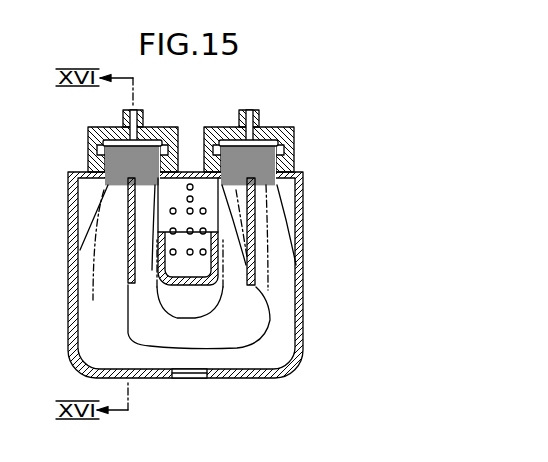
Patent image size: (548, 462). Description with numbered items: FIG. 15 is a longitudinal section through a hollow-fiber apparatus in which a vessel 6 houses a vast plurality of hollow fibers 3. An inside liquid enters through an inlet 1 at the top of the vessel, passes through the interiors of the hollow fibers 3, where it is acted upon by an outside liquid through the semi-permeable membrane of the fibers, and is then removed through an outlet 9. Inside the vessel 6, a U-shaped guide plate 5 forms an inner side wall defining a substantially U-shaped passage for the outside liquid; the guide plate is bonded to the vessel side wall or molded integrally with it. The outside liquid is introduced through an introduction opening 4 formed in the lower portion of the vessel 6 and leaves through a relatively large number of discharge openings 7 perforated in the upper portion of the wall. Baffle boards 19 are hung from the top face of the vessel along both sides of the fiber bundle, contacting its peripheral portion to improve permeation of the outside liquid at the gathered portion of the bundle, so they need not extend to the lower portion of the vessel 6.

The inlet 1 is at (143, 120).
The outlet 9 is at (259, 121).
The vessel 6 is at (68, 210).
The hollow fibers 3 is at (102, 315).
The introduction opening 4 is at (192, 378).
The U-shaped guide plate 5 is at (219, 238).
The discharge openings 7 is at (207, 210).
The baffle board 19 is at (128, 260).